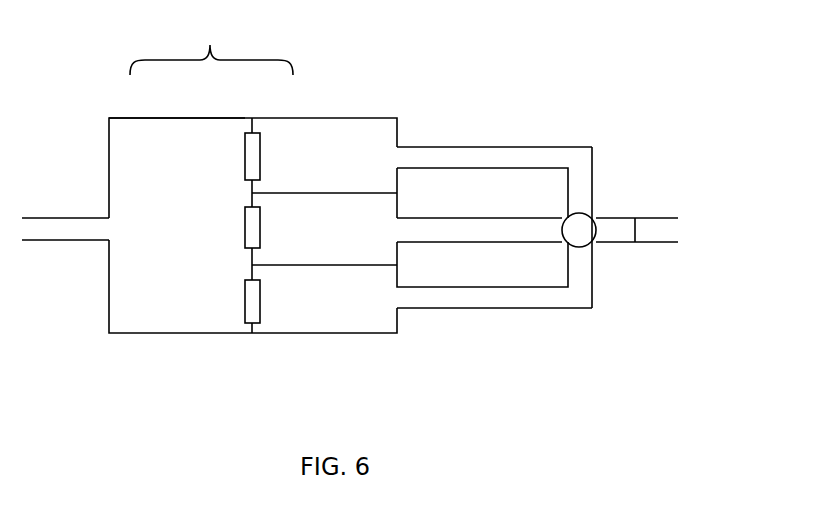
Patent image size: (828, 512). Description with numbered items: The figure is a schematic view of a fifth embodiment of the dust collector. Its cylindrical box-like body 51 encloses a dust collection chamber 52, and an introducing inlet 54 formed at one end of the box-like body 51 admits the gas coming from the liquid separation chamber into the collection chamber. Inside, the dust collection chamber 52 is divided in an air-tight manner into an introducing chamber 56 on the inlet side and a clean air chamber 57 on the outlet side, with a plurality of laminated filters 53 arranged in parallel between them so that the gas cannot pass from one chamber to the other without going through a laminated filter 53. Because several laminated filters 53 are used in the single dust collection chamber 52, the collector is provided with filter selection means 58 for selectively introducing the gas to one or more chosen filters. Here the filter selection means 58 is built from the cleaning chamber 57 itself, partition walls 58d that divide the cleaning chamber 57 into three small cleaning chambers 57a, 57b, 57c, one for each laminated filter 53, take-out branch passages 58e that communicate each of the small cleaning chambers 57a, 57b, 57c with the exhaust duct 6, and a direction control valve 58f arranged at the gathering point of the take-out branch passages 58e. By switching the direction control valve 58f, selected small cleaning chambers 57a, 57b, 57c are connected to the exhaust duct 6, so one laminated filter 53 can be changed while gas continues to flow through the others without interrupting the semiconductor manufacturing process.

The box-like body 51 is at (193, 333).
The dust collection chamber 52 is at (211, 44).
The laminated filter 53 is at (245, 155).
The introducing inlet 54 is at (103, 227).
The introducing chamber 56 is at (143, 128).
The clean air chamber 57 is at (281, 128).
The small cleaning chamber 57a is at (378, 150).
The small cleaning chamber 57b is at (358, 232).
The small cleaning chamber 57c is at (365, 313).
The filter selection means 58 is at (603, 172).
The partition wall 58d is at (307, 193).
The take-out branch passage 58e is at (515, 146).
The direction control valve 58f is at (580, 237).
The exhaust duct 6 is at (645, 232).